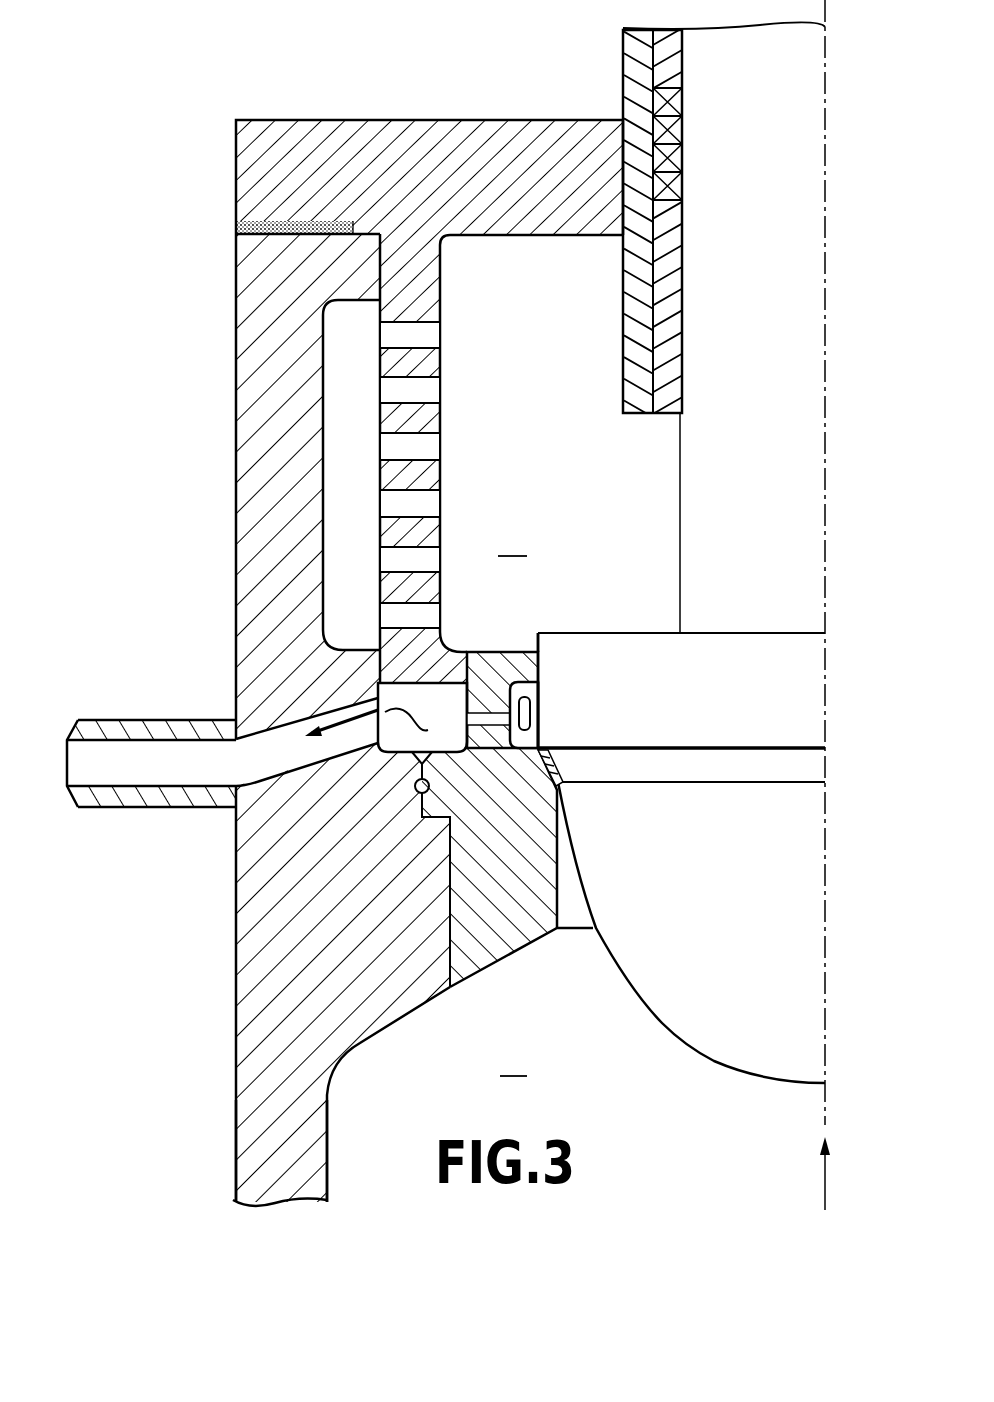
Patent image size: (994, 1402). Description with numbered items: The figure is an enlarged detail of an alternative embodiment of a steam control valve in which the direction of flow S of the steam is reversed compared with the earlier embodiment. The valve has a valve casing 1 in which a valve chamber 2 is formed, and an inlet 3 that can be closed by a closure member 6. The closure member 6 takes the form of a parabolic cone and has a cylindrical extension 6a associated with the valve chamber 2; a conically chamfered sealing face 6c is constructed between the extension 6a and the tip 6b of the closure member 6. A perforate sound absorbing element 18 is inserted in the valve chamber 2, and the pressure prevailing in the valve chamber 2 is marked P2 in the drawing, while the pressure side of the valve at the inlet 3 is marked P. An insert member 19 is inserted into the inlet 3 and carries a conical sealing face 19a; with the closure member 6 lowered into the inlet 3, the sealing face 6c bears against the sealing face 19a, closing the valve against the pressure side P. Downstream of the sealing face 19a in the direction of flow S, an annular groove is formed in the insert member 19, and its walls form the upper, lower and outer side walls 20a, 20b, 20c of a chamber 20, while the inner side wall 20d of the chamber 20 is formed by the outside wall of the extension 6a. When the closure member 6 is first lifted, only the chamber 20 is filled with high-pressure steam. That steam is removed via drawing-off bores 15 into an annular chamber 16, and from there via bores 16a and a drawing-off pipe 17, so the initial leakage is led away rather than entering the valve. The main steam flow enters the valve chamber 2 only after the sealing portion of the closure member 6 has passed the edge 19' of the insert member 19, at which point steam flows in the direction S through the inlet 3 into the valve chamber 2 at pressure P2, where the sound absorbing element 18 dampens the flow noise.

The valve casing 1 is at (243, 548).
The valve chamber 2 is at (468, 400).
The inlet 3 is at (348, 1185).
The closure member 6 is at (834, 732).
The cylindrical extension 6a is at (817, 680).
The tip 6b is at (708, 1052).
The sealing face 6c is at (817, 770).
The drawing-off bores 15 is at (487, 703).
The annular chamber 16 is at (390, 692).
The bores 16a is at (258, 737).
The drawing-off pipe 17 is at (90, 720).
The perforate sound absorbing element 18 is at (440, 470).
The insert member 19 is at (507, 880).
The edge 19' is at (568, 627).
The sealing face 19a is at (562, 790).
The chamber 20 is at (543, 728).
The upper side wall 20a is at (570, 663).
The lower side wall 20b is at (543, 747).
The outer side wall 20c is at (543, 697).
The inner side wall 20d is at (543, 708).
The pressure side P is at (513, 1060).
The pressure P2 is at (513, 537).
The direction of flow S is at (826, 1192).